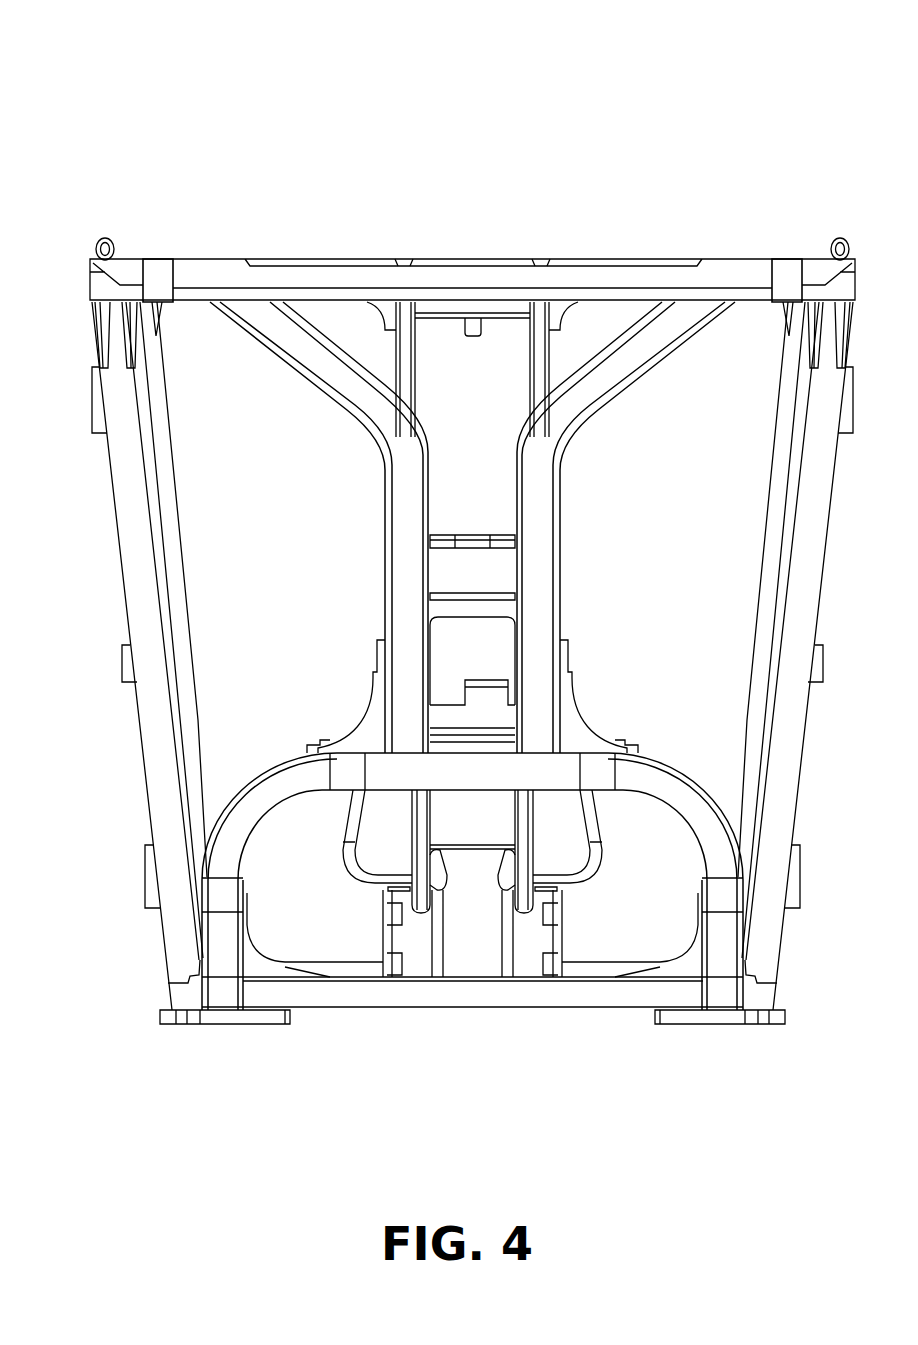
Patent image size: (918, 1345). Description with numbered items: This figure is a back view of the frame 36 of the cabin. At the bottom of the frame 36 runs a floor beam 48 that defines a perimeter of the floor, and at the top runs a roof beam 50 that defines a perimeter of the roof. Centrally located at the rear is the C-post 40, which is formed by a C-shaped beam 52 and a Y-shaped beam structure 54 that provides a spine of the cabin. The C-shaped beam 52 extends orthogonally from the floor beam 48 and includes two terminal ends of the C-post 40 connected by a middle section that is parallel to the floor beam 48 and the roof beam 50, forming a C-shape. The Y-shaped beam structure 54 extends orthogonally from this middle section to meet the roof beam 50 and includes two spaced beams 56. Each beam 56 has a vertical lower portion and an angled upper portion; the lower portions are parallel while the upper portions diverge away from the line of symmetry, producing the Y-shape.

The frame 36 is at (645, 142).
The C-post 40 is at (537, 622).
The floor beam 48 is at (473, 992).
The roof beam 50 is at (218, 277).
The C-shaped beam 52 is at (270, 795).
The Y-shaped beam structure 54 is at (645, 348).
The spaced beam 56 is at (405, 540).